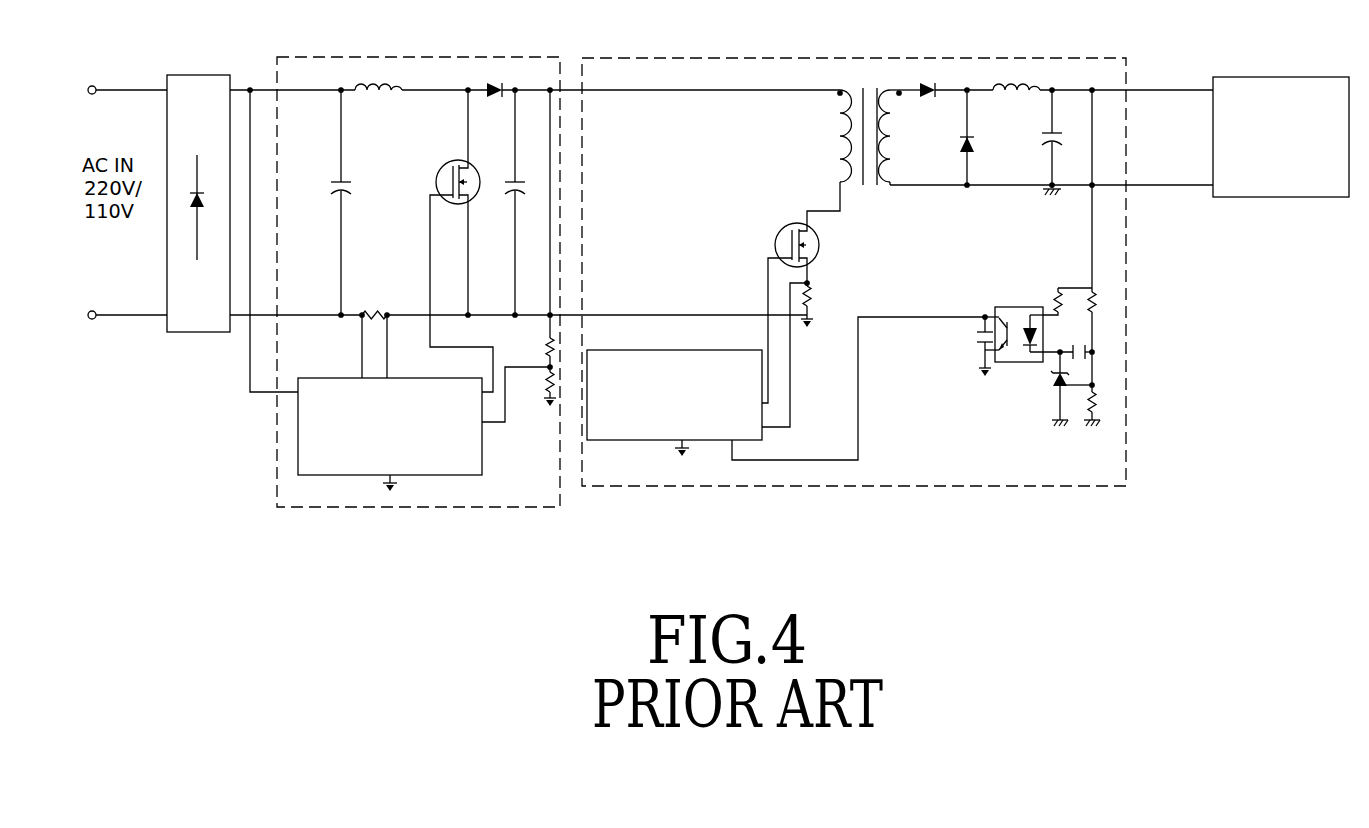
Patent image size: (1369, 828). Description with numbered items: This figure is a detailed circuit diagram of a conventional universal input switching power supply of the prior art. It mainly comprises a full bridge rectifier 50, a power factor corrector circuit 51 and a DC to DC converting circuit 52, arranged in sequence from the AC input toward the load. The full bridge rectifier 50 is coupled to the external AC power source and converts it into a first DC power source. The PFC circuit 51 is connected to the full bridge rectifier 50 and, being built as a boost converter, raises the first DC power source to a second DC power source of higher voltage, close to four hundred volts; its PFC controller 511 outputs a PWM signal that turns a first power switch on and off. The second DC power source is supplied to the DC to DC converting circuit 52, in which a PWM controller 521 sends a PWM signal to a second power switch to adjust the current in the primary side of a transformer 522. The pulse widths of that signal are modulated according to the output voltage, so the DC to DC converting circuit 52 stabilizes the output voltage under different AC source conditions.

The full bridge rectifier 50 is at (210, 75).
The power factor corrector circuit 51 is at (422, 57).
The PFC controller 511 is at (450, 475).
The DC to DC converting circuit 52 is at (715, 58).
The PWM controller 521 is at (627, 350).
The transformer 522 is at (878, 72).